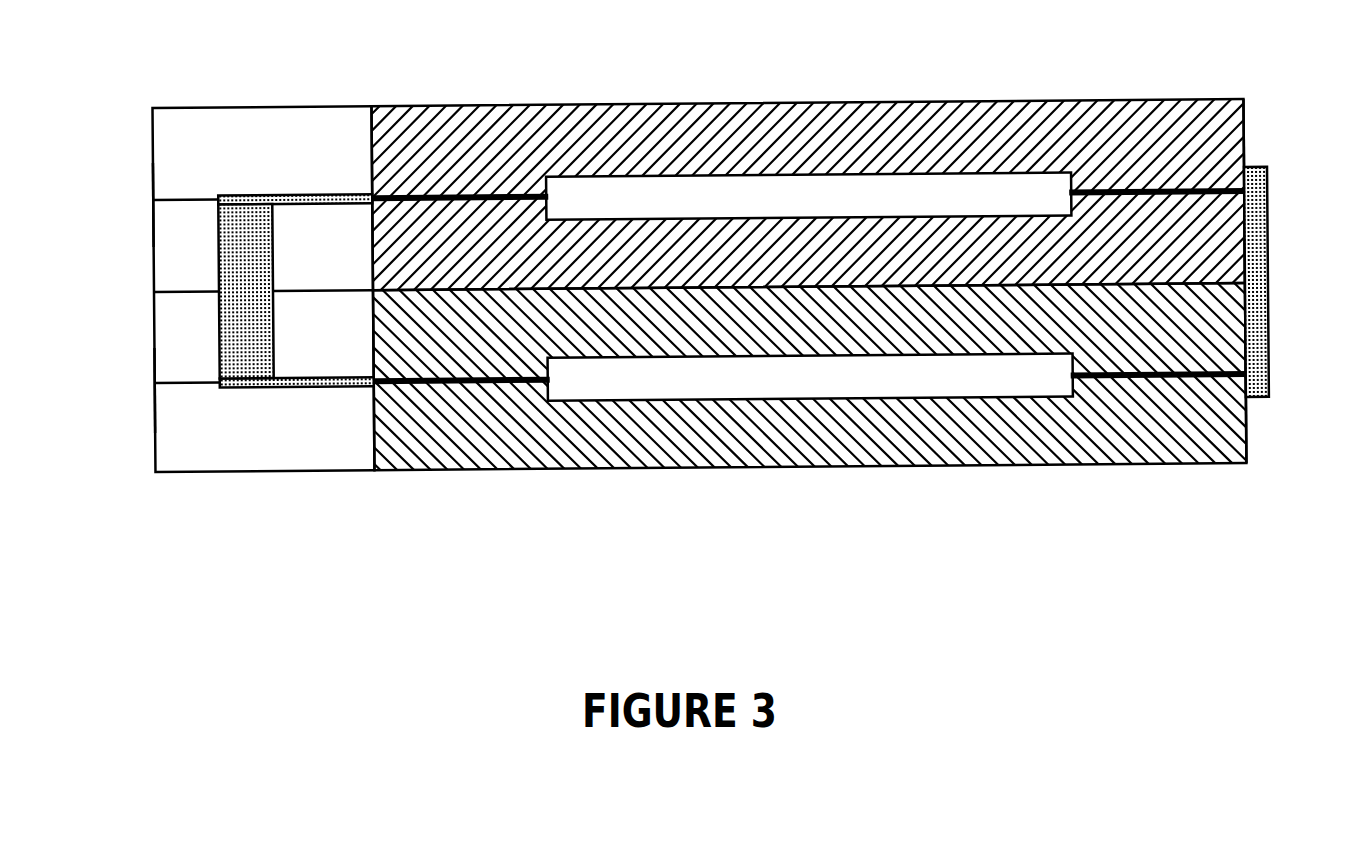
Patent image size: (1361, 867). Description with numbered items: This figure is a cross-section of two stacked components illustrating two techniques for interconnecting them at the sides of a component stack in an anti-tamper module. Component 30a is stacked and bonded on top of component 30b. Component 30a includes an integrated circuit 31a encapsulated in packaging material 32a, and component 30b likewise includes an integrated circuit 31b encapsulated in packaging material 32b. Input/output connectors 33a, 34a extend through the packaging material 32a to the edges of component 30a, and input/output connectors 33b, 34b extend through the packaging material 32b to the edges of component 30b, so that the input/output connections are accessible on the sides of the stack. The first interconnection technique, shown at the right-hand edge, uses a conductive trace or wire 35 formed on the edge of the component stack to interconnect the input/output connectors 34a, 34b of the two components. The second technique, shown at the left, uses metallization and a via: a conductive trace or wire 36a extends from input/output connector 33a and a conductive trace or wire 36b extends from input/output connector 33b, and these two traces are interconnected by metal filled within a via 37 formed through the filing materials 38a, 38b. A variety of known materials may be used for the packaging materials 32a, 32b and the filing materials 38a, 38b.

The component 30a is at (426, 70).
The component 30b is at (445, 512).
The integrated circuit 31a is at (838, 206).
The integrated circuit 31b is at (875, 381).
The packaging material 32a is at (1222, 138).
The packaging material 32b is at (1223, 471).
The input/output connector 33a is at (514, 202).
The input/output connector 33b is at (514, 390).
The input/output connector 34a is at (1135, 198).
The input/output connector 34b is at (1153, 385).
The conductive trace or wire 35 is at (1270, 312).
The conductive trace or wire 36a is at (273, 195).
The conductive trace or wire 36b is at (305, 391).
The via 37 is at (235, 272).
The filing material 38a is at (172, 163).
The filing material 38b is at (173, 348).